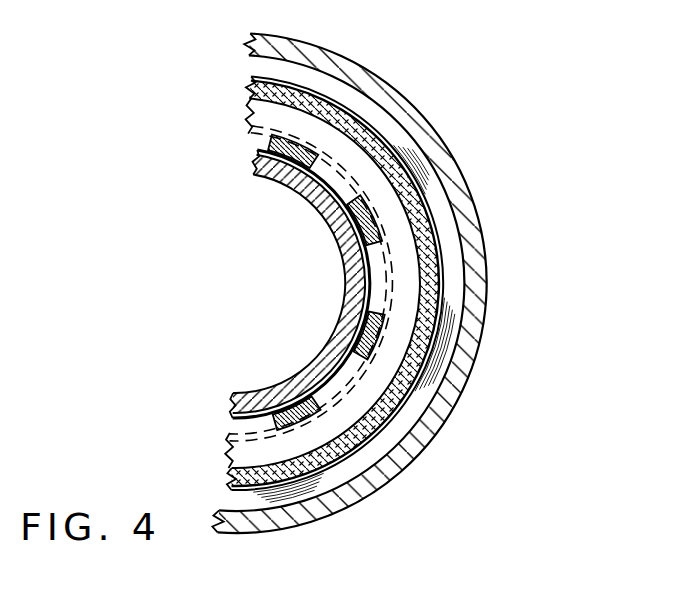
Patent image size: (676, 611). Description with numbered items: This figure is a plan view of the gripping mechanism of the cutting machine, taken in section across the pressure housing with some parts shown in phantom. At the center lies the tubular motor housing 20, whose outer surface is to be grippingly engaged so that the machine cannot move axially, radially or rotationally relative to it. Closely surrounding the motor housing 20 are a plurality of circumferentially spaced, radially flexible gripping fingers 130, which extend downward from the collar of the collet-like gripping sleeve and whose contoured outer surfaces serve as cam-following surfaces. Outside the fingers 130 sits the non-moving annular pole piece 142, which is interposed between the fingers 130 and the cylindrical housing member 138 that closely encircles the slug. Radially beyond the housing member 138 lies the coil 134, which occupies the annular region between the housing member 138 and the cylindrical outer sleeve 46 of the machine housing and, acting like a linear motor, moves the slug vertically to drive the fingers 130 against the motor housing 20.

The motor housing 20 is at (338, 203).
The outer sleeve 46 is at (447, 170).
The gripping fingers 130 is at (356, 332).
The coil 134 is at (447, 237).
The housing member 138 is at (433, 303).
The pole piece 142 is at (252, 113).